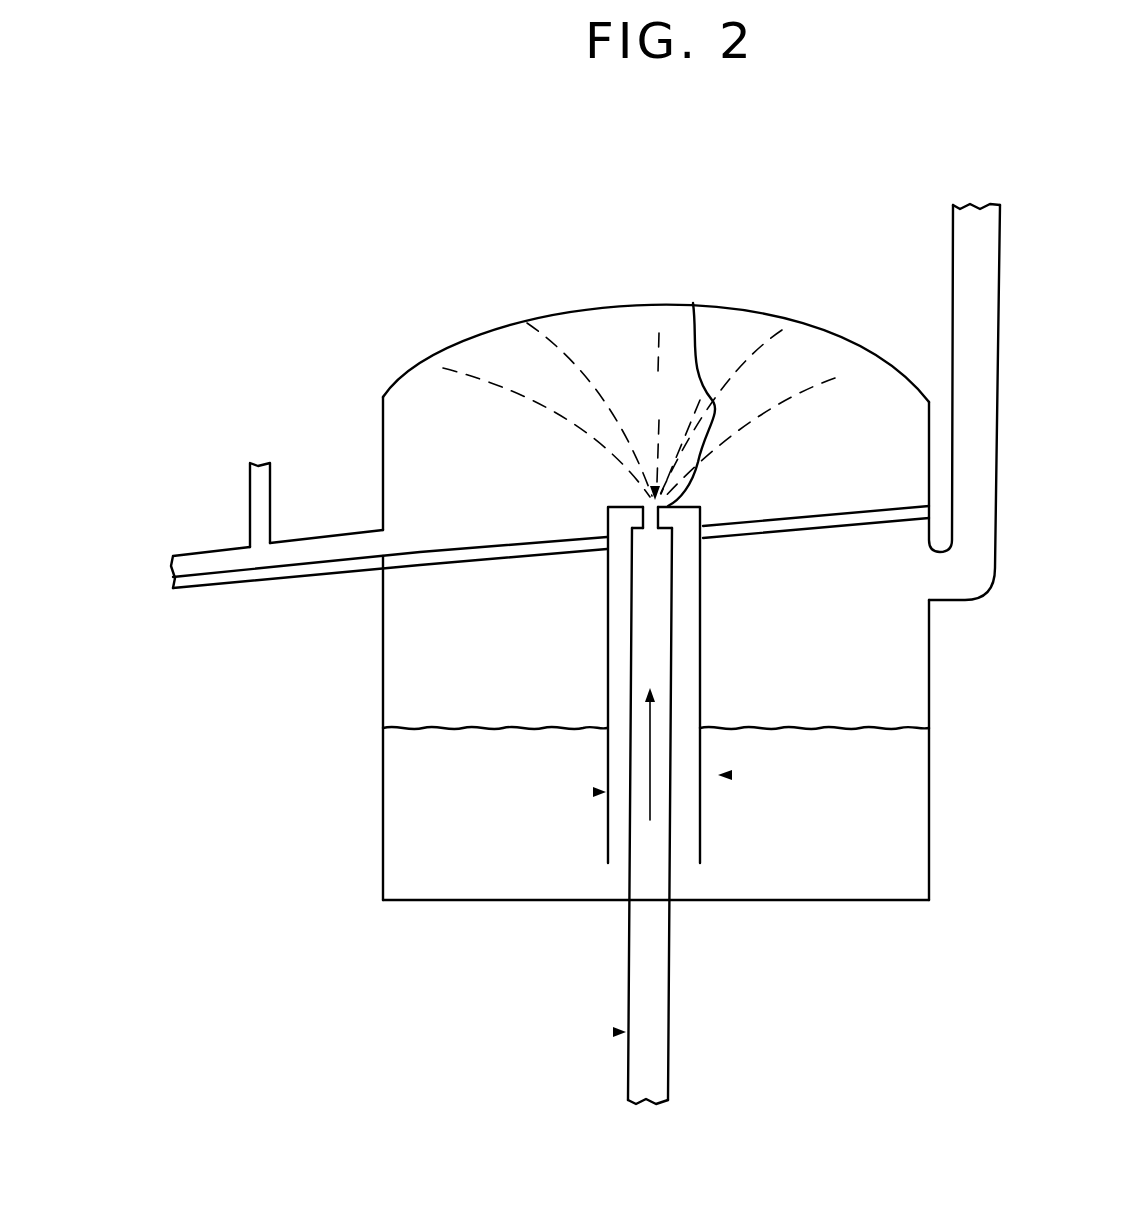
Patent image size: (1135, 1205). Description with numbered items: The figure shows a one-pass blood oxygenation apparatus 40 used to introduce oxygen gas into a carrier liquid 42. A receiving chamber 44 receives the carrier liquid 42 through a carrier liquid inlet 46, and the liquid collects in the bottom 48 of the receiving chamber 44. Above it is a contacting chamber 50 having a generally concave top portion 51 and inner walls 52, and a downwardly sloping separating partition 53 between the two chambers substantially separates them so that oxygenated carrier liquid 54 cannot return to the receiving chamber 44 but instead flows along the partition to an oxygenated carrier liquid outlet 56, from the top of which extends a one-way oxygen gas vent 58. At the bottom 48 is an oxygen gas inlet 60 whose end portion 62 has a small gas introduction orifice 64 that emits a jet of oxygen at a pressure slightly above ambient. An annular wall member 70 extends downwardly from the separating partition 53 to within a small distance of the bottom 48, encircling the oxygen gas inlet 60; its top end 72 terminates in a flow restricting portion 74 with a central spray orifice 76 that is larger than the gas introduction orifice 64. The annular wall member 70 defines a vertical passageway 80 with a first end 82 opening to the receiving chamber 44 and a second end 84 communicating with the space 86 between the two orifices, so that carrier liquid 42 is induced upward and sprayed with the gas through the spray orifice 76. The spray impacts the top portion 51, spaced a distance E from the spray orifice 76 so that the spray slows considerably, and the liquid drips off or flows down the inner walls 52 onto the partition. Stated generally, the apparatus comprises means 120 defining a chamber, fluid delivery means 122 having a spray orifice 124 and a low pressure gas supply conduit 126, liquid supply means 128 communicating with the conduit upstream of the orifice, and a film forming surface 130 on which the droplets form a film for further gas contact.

The oxygenation apparatus 40 is at (210, 350).
The carrier liquid 42 is at (405, 810).
The receiving chamber 44 is at (405, 640).
The carrier liquid inlet 46 is at (948, 604).
The bottom 48 is at (790, 899).
The contacting chamber 50 is at (405, 460).
The concave top portion 51 is at (470, 338).
The inner walls 52 is at (386, 507).
The separating partition 53 is at (484, 566).
The oxygenated carrier liquid 54 is at (527, 550).
The oxygenated carrier liquid outlet 56 is at (313, 553).
The one-way oxygen gas vent 58 is at (248, 500).
The oxygen gas inlet 60 is at (670, 1000).
The end portion 62 is at (643, 528).
The gas introduction orifice 64 is at (656, 533).
The annular wall member 70 is at (700, 597).
The top end 72 is at (703, 507).
The flow restricting portion 74 is at (672, 508).
The spray orifice 76 is at (785, 506).
The passageway 80 is at (615, 680).
The first end 82 is at (617, 852).
The second end 84 is at (608, 560).
The space 86 is at (638, 498).
The means defining a chamber 120 is at (806, 318).
The fluid delivery means 122 is at (730, 775).
The spray orifice 124 is at (654, 488).
The low pressure gas supply conduit 126 is at (616, 1032).
The liquid supply means 128 is at (596, 792).
The film forming surface 130 is at (509, 335).
The distance E is at (744, 398).